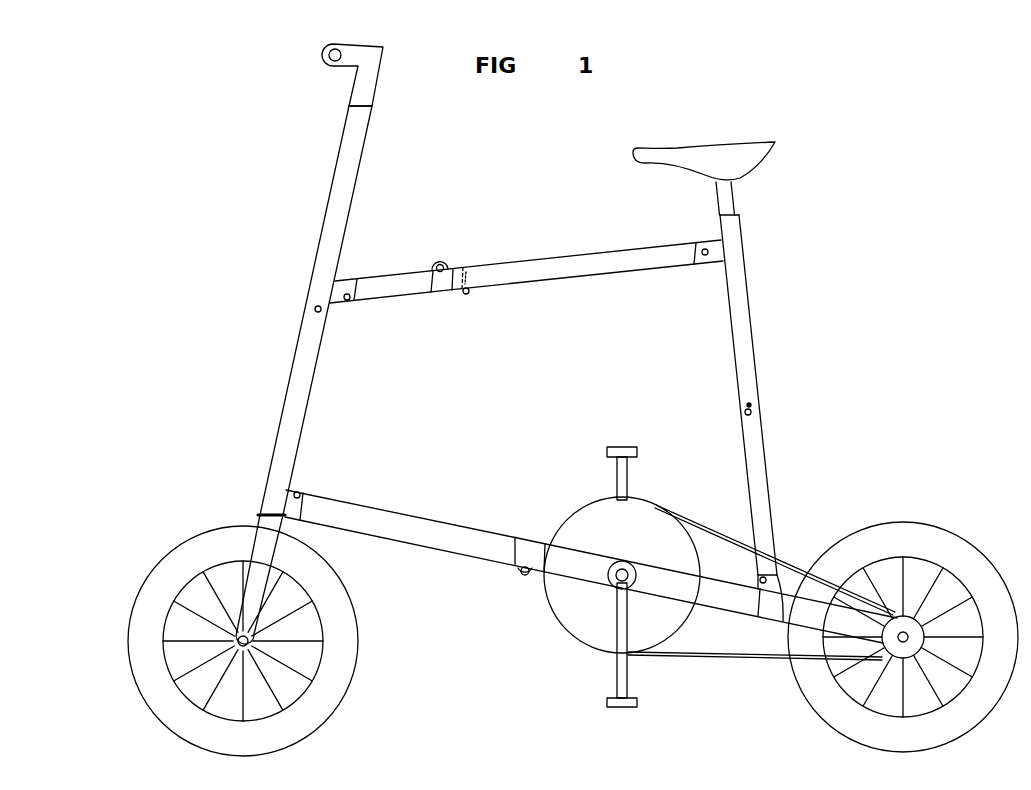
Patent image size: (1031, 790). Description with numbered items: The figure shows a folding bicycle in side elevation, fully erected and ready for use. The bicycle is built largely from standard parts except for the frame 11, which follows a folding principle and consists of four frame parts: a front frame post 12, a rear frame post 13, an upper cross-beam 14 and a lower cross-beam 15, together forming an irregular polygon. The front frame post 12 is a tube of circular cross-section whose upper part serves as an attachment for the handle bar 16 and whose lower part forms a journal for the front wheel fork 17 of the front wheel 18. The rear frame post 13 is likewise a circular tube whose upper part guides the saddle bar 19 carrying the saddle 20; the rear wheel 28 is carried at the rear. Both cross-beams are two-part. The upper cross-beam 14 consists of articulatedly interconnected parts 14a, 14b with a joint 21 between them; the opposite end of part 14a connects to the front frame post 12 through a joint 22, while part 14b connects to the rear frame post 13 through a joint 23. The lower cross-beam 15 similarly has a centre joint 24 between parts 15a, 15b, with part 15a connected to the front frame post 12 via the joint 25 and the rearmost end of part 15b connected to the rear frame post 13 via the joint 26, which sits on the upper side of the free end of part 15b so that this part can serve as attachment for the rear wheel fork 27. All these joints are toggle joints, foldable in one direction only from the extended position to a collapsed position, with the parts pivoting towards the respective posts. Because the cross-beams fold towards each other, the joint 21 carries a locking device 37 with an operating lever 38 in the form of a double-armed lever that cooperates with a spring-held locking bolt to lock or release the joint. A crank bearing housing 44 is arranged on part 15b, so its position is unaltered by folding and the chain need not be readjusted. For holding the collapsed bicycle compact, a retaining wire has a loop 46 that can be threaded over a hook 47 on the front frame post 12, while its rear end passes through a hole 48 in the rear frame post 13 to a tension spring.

The frame 11 is at (752, 287).
The front frame post 12 is at (294, 310).
The rear frame post 13 is at (748, 487).
The upper cross-beam 14 is at (526, 280).
The part of upper cross-beam 14a is at (400, 284).
The part of upper cross-beam 14b is at (600, 263).
The lower cross-beam 15 is at (603, 579).
The part of lower cross-beam 15a is at (400, 508).
The part of lower cross-beam 15b is at (718, 586).
The handle bar 16 is at (368, 87).
The front wheel fork 17 is at (265, 545).
The front wheel 18 is at (150, 597).
The saddle bar 19 is at (723, 200).
The saddle 20 is at (717, 162).
The joint 21 is at (441, 262).
The joint 22 is at (349, 301).
The joint 23 is at (705, 257).
The centre joint 24 is at (534, 527).
The joint 25 is at (300, 492).
The joint 26 is at (777, 562).
The rear wheel fork 27 is at (863, 627).
The rear wheel 28 is at (958, 556).
The locking device 37 is at (472, 275).
The operating lever 38 is at (470, 295).
The crank bearing housing 44 is at (618, 590).
The loop 46 is at (745, 412).
The hook 47 is at (315, 309).
The hole 48 is at (752, 403).